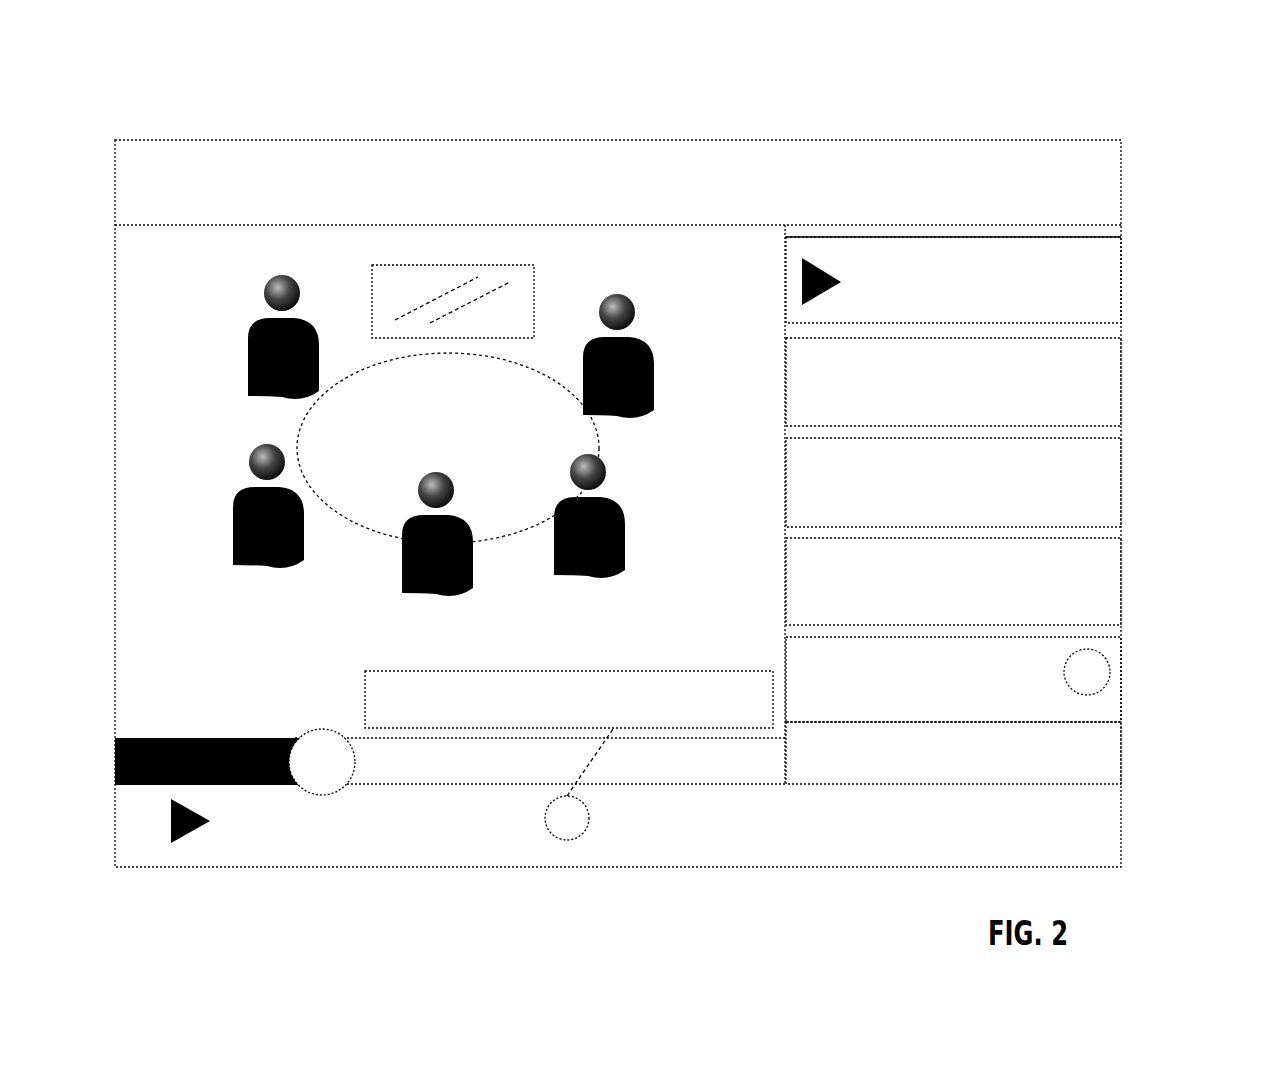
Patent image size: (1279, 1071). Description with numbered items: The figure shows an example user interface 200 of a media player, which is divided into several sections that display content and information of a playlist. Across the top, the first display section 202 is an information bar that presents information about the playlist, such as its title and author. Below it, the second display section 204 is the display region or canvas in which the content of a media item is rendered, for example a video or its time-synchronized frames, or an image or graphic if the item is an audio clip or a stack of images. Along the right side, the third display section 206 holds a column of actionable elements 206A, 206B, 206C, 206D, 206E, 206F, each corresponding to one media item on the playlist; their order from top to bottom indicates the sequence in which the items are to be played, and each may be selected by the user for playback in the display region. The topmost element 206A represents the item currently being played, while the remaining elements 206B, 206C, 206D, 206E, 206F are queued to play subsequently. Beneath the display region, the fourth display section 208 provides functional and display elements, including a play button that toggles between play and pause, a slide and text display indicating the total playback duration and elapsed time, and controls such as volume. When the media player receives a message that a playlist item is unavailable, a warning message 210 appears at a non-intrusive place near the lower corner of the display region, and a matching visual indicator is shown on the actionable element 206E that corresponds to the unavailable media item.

The user interface 200 is at (685, 460).
The first display section 202 is at (302, 165).
The second display section 204 is at (560, 250).
The third display section 206 is at (1007, 429).
The actionable element 206A is at (1007, 280).
The actionable element 206B is at (1007, 382).
The actionable element 206C is at (1007, 482).
The actionable element 206D is at (1007, 581).
The actionable element 206E is at (1007, 679).
The actionable element 206F is at (1007, 753).
The fourth display section 208 is at (228, 855).
The warning message 210 is at (576, 850).